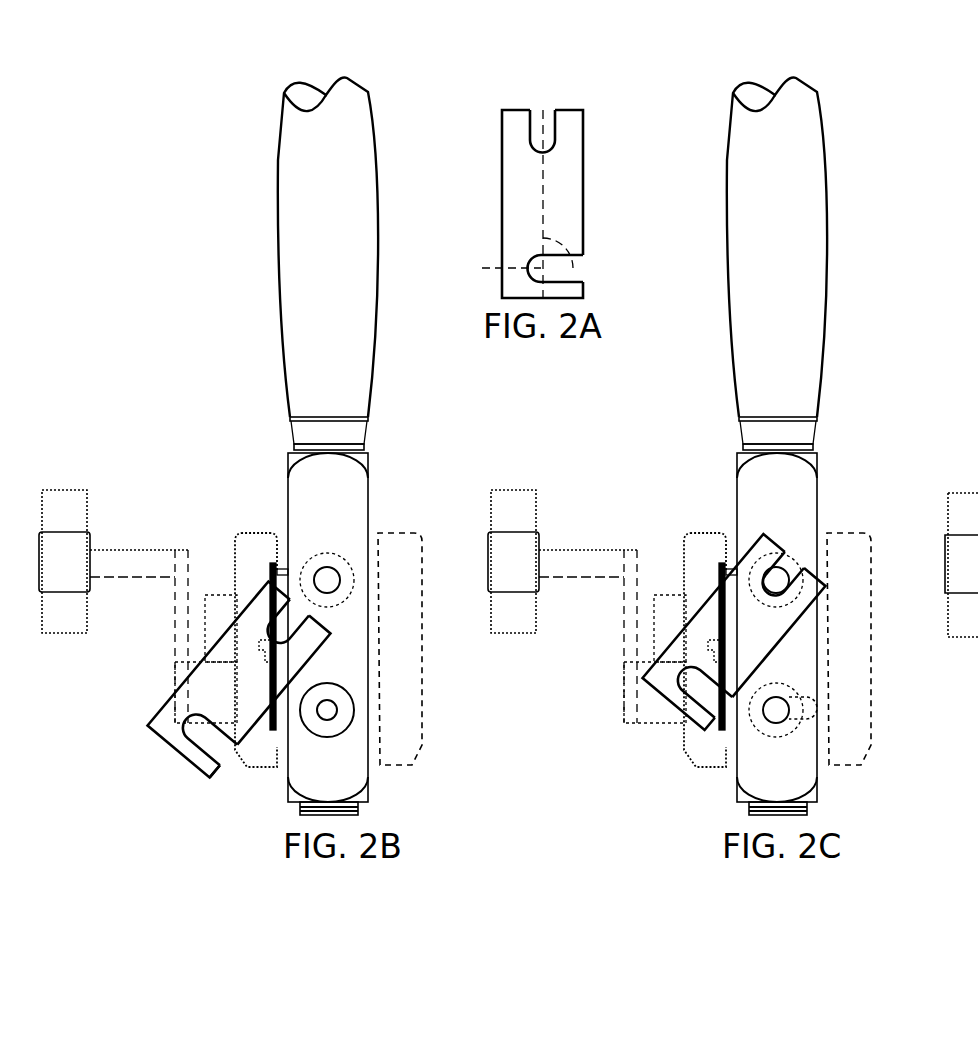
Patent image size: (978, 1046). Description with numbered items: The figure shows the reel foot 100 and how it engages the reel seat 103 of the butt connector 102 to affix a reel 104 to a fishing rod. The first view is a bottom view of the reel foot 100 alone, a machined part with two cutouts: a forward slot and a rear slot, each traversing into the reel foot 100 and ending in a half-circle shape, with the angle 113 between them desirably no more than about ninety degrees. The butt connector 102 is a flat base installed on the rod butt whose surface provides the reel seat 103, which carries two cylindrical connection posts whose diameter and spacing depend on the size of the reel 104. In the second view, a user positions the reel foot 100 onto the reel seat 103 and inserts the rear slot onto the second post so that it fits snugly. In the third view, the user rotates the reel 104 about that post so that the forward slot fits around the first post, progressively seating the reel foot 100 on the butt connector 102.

In FIG. 2A, the reel foot 100 is at (502, 110).
In FIG. 2B, the reel foot 100 is at (157, 740).
In FIG. 2C, the reel foot 100 is at (780, 535).
In FIG. 2B, the butt connector 102 is at (340, 512).
In FIG. 2B, the reel seat 103 is at (336, 651).
In FIG. 2B, the reel 104 is at (236, 533).
In FIG. 2C, the reel 104 is at (690, 533).
In FIG. 2A, the angle 113 is at (563, 231).